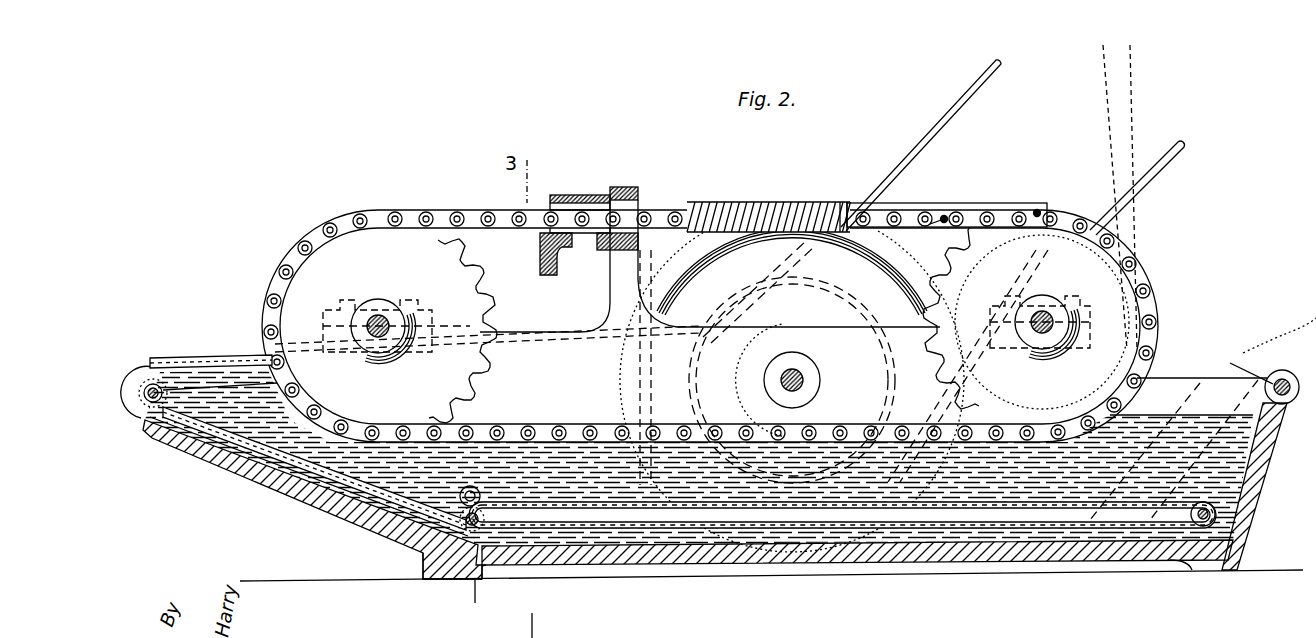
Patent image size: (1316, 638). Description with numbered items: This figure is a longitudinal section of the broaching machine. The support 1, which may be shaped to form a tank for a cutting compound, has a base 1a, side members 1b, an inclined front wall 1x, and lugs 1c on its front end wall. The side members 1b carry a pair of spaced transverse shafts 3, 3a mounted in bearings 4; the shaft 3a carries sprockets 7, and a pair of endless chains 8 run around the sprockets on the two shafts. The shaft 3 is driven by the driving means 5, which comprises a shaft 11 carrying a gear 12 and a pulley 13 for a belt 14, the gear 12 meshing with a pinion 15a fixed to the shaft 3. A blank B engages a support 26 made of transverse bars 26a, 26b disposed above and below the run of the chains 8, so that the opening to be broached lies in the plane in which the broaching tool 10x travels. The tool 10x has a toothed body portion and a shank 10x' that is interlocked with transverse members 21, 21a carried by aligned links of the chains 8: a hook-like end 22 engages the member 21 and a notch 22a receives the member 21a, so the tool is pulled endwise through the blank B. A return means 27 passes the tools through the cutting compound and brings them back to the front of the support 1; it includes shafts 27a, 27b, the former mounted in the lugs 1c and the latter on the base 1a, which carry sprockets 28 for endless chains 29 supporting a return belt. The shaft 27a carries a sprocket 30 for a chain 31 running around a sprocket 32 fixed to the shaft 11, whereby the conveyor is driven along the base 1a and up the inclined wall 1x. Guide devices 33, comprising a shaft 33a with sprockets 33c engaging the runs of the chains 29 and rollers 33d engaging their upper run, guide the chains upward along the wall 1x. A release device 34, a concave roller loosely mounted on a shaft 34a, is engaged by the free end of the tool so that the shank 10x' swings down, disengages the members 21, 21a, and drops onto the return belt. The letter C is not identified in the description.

The support 1 is at (724, 475).
The base 1a is at (817, 557).
The side members 1b is at (607, 301).
The lugs 1c is at (146, 425).
The front wall 1x is at (317, 490).
The transverse shaft 3 is at (1045, 335).
The transverse shaft 3a is at (385, 318).
The bearings 4 is at (375, 296).
The driving means 5 is at (563, 195).
The sprockets 7 is at (468, 288).
The endless chains 8 is at (470, 210).
The broaching tool 10x is at (768, 204).
The tool shank 10x' is at (947, 201).
The shaft 11 is at (792, 369).
The gear 12 is at (792, 272).
The pulley 13 is at (815, 284).
The belt 14 is at (906, 152).
The pinion 15a is at (1026, 318).
The transverse member 21 is at (1045, 228).
The transverse member 21a is at (1053, 197).
The hook-like end 22 is at (1038, 211).
The notch 22a is at (946, 216).
The support 26 is at (640, 214).
The transverse bar 26a is at (627, 187).
The transverse bar 26b is at (638, 248).
The return means 27 is at (842, 505).
The shaft 27a is at (156, 380).
The shaft 27b is at (1204, 502).
The sprockets 28 is at (170, 392).
The endless chains 29 is at (992, 505).
The sprocket 30 is at (205, 356).
The chain 31 is at (232, 358).
The sprocket 32 is at (741, 380).
The guide devices 33 is at (485, 494).
The shaft 33a is at (423, 553).
The sprockets 33c is at (475, 531).
The rollers 33d is at (479, 491).
The release device 34 is at (1269, 444).
The shaft 34a is at (1236, 366).
The blank B is at (540, 258).
The gear C is at (792, 391).